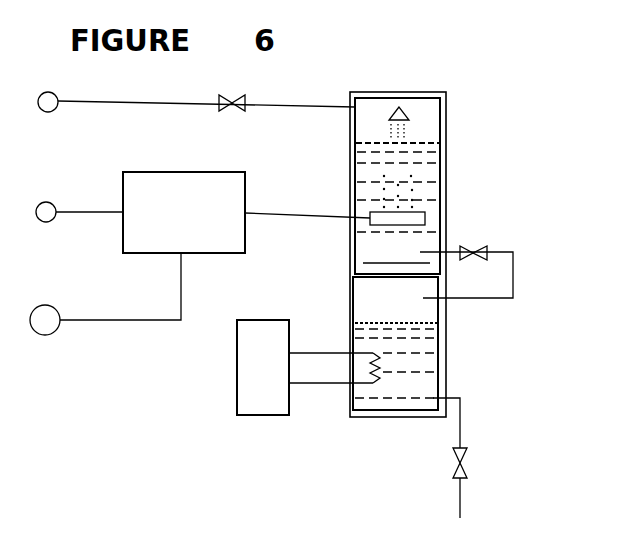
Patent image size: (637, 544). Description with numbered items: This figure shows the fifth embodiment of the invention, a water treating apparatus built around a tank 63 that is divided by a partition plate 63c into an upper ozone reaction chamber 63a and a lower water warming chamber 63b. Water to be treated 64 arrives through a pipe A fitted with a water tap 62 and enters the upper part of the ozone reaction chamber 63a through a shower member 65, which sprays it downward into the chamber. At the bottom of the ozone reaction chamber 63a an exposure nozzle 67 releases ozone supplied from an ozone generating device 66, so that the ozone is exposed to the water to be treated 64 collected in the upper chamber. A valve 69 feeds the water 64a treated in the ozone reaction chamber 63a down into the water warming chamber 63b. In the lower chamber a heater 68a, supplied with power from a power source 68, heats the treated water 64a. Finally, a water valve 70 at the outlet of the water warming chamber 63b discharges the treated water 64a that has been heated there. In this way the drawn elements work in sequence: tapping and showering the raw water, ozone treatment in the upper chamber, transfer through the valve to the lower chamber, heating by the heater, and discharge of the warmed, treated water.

The pipe A is at (131, 101).
The water tap 62 is at (232, 97).
The tank 63 is at (453, 94).
The ozone reaction chamber 63a is at (350, 157).
The water warming chamber 63b is at (348, 308).
The partition plate 63c is at (362, 272).
The water to be treated 64 is at (362, 192).
The treated water 64a is at (423, 363).
The shower member 65 is at (405, 108).
The ozone generating device 66 is at (172, 196).
The exposure nozzle 67 is at (425, 218).
The power source 68 is at (258, 393).
The heater 68a is at (378, 382).
The valve 69 is at (470, 250).
The water valve 70 is at (469, 456).